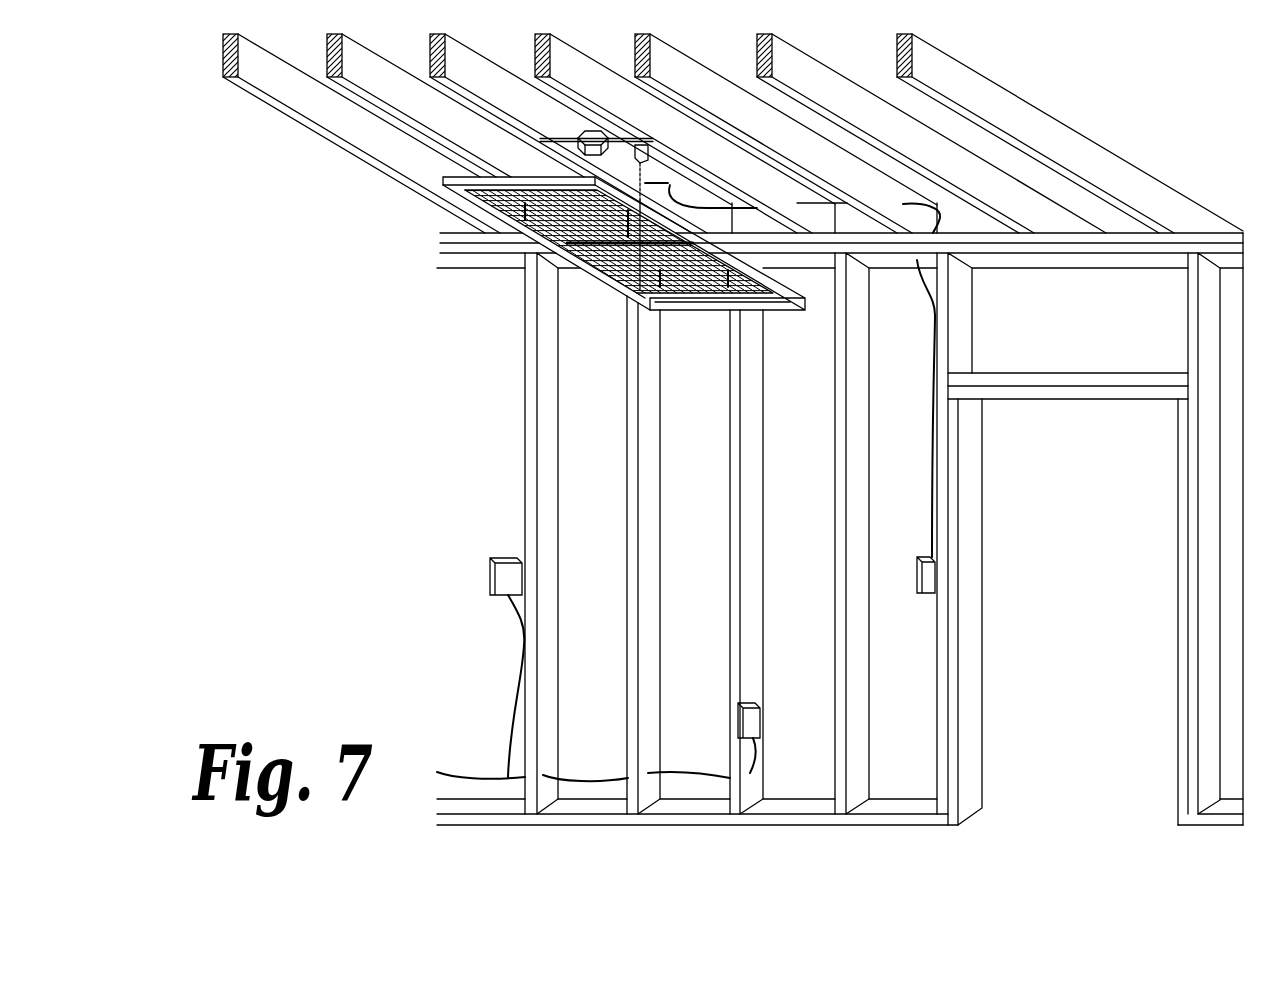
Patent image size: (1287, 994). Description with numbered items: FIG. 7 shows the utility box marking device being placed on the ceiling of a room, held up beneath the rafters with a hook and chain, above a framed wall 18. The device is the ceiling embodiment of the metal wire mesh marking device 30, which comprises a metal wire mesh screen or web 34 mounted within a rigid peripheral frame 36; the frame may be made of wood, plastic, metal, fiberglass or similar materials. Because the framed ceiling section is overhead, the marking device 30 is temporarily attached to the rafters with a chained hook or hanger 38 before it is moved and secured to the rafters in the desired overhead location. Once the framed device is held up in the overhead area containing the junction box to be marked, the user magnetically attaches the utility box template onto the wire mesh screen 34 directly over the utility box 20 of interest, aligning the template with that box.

The framed wall 18 is at (520, 413).
The utility box 20 is at (591, 130).
The marking device for ceiling mounted device 30 is at (473, 202).
The wire mesh screen or web for ceiling mounted device 34 is at (605, 258).
The rigid peripheral frame for ceiling mounted device 36 is at (528, 238).
The chained hook or hanger 38 is at (670, 185).